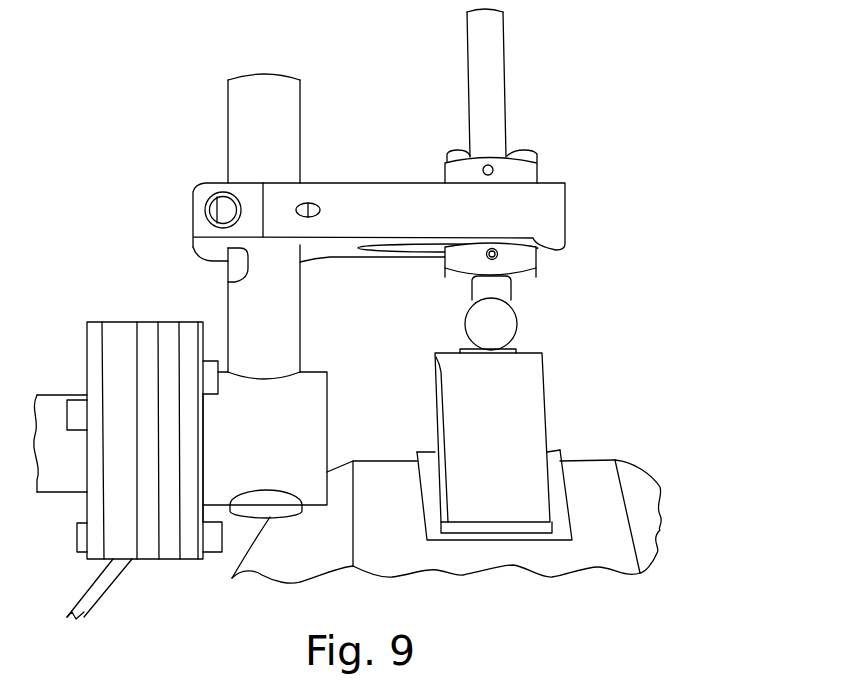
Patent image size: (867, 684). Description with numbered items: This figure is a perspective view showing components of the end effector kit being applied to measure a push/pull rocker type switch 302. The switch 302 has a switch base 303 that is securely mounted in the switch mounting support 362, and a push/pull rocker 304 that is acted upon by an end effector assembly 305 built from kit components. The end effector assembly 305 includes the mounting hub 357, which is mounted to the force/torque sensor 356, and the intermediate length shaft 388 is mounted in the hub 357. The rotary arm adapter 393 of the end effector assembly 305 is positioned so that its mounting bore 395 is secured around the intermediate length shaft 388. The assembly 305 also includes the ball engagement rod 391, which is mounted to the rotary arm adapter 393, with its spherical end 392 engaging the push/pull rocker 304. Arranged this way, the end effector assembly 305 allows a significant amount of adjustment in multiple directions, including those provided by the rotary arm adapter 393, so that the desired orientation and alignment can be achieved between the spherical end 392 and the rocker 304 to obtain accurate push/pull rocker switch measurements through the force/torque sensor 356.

The push/pull rocker type switch 302 is at (592, 435).
The switch base 303 is at (495, 570).
The push/pull rocker 304 is at (546, 378).
The end effector assembly 305 is at (573, 122).
The force/torque sensor 356 is at (152, 560).
The mounting hub 357 is at (192, 560).
The switch mounting support 362 is at (660, 530).
The intermediate length shaft 388 is at (228, 118).
The ball engagement rod 391 is at (504, 40).
The spherical end 392 is at (517, 325).
The rotary arm adapter 393 is at (193, 225).
The mounting bore 395 is at (228, 282).